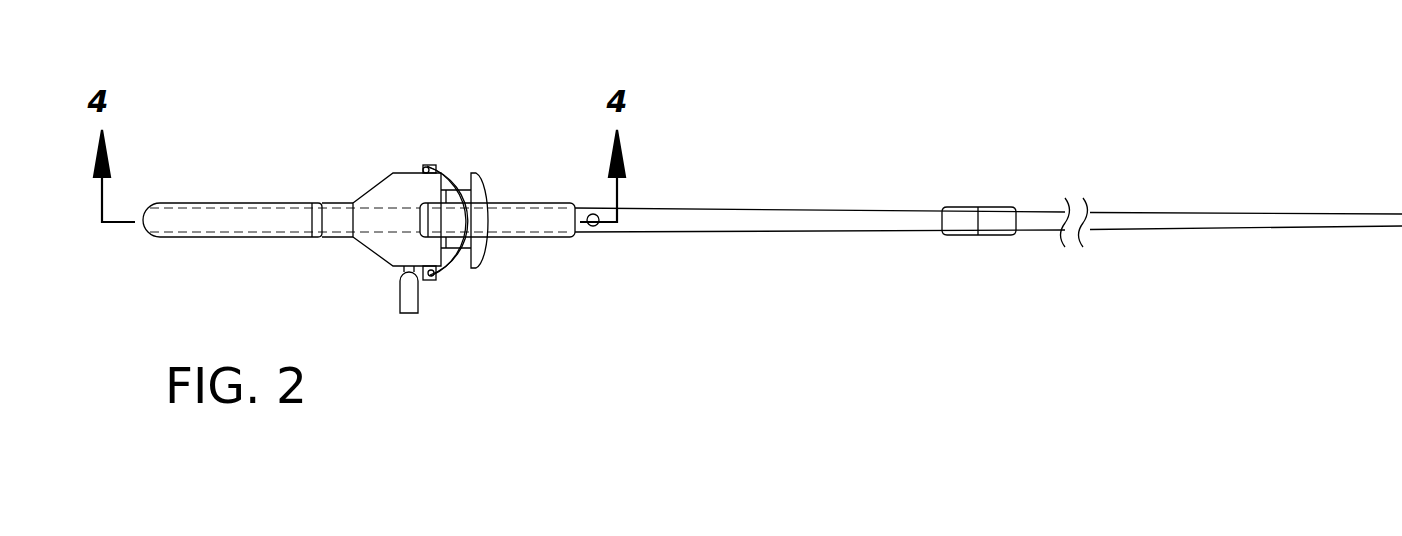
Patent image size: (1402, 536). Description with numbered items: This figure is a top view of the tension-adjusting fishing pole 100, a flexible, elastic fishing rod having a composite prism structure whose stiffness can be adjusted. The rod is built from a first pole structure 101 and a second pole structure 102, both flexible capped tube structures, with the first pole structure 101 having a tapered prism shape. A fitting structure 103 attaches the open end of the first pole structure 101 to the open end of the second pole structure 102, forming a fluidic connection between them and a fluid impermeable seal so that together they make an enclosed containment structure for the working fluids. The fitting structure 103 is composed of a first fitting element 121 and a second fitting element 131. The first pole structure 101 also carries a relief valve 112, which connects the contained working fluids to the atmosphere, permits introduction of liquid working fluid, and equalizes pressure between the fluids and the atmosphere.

The tension-adjusting fishing pole 100 is at (772, 221).
The first pole structure 101 is at (988, 184).
The second pole structure 102 is at (1198, 213).
The fitting structure 103 is at (964, 295).
The relief valve 112 is at (597, 226).
The first fitting element 121 is at (962, 237).
The second fitting element 131 is at (999, 267).